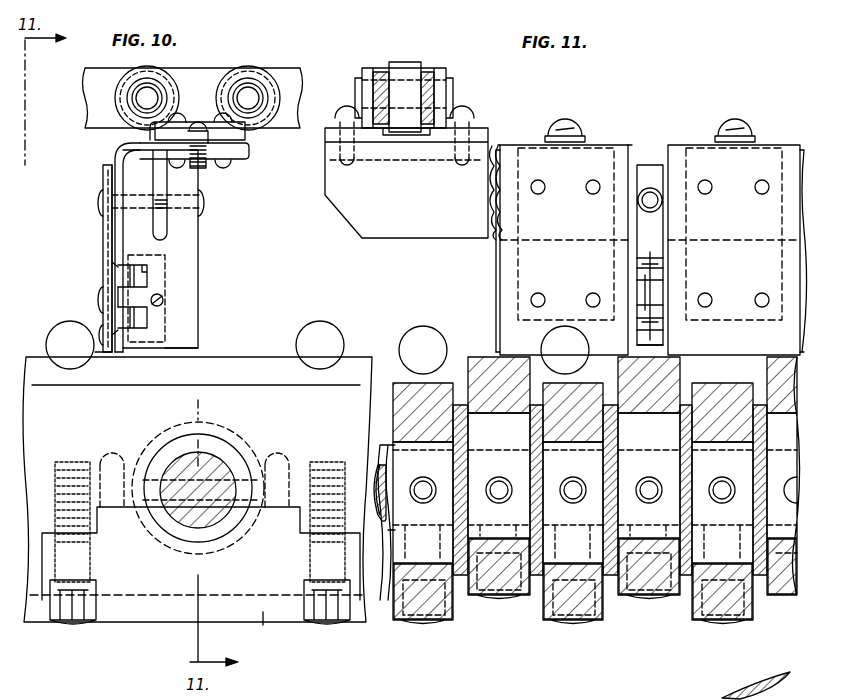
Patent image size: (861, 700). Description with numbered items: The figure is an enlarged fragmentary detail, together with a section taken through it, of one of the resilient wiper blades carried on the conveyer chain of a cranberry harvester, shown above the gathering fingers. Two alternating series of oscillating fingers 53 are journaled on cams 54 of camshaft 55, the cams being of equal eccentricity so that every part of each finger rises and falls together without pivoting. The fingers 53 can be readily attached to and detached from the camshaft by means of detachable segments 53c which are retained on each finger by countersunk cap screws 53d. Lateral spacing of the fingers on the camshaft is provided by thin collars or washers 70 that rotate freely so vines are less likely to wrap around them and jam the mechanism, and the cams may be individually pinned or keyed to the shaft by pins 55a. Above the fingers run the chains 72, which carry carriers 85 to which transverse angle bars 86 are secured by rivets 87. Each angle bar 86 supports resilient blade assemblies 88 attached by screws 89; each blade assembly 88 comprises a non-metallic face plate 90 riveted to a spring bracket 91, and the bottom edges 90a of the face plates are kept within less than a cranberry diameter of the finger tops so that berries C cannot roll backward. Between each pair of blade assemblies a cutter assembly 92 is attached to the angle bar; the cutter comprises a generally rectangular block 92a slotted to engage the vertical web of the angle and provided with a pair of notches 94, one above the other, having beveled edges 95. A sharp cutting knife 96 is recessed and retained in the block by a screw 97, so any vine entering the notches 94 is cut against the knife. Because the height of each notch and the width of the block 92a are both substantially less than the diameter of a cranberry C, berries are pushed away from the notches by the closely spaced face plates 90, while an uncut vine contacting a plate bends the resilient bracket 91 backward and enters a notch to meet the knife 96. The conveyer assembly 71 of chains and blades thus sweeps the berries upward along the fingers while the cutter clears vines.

In FIG. 10, the oscillating fingers 53 is at (270, 380).
In FIG. 11, the oscillating fingers 53 is at (500, 598).
In FIG. 10, the detachable segments 53c is at (263, 626).
In FIG. 10, the countersunk cap screws 53d is at (75, 624).
In FIG. 10, the cams 54 is at (162, 428).
In FIG. 11, the cams 54 is at (512, 440).
In FIG. 10, the camshaft 55 is at (186, 520).
In FIG. 11, the camshaft 55 is at (388, 456).
In FIG. 10, the pins 55a is at (238, 475).
In FIG. 11, the pins 55a is at (423, 482).
In FIG. 10, the collars or washers 70 is at (270, 435).
In FIG. 11, the collars or washers 70 is at (458, 402).
In FIG. 10, the trolley assembly 71 is at (62, 140).
In FIG. 11, the trolley assembly 71 is at (640, 92).
In FIG. 10, the chains 72 is at (98, 82).
In FIG. 11, the chains 72 is at (378, 68).
In FIG. 10, the carriers 85 is at (245, 140).
In FIG. 11, the carriers 85 is at (484, 130).
In FIG. 10, the transverse angle bars 86 is at (235, 158).
In FIG. 11, the transverse angle bars 86 is at (494, 232).
In FIG. 10, the rivets 87 is at (220, 114).
In FIG. 11, the rivets 87 is at (344, 118).
In FIG. 10, the resilient blade assemblies 88 is at (76, 268).
In FIG. 11, the resilient blade assemblies 88 is at (578, 261).
In FIG. 10, the screws 89 is at (204, 168).
In FIG. 11, the screws 89 is at (570, 132).
In FIG. 10, the non-metallic face plate 90 is at (102, 222).
In FIG. 11, the non-metallic face plate 90 is at (676, 162).
In FIG. 10, the bottom edges 90a is at (108, 354).
In FIG. 11, the bottom edges 90a is at (502, 348).
In FIG. 10, the spring bracket 91 is at (120, 146).
In FIG. 11, the spring bracket 91 is at (612, 156).
In FIG. 10, the cutter assembly 92 is at (246, 289).
In FIG. 11, the cutter assembly 92 is at (660, 230).
In FIG. 10, the rectangular block 92a is at (252, 343).
In FIG. 11, the rectangular block 92a is at (666, 340).
In FIG. 10, the notches 94 is at (137, 263).
In FIG. 11, the notches 94 is at (640, 284).
In FIG. 10, the beveled edges 95 is at (110, 264).
In FIG. 11, the beveled edges 95 is at (662, 290).
In FIG. 10, the cutting knife 96 is at (120, 282).
In FIG. 11, the cutting knife 96 is at (658, 322).
In FIG. 10, the screw 97 is at (163, 296).
In FIG. 10, the cranberry C is at (56, 334).
In FIG. 11, the cranberry C is at (425, 326).